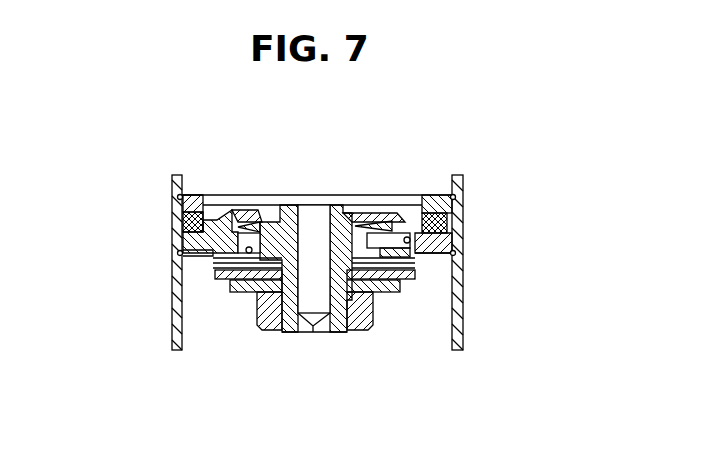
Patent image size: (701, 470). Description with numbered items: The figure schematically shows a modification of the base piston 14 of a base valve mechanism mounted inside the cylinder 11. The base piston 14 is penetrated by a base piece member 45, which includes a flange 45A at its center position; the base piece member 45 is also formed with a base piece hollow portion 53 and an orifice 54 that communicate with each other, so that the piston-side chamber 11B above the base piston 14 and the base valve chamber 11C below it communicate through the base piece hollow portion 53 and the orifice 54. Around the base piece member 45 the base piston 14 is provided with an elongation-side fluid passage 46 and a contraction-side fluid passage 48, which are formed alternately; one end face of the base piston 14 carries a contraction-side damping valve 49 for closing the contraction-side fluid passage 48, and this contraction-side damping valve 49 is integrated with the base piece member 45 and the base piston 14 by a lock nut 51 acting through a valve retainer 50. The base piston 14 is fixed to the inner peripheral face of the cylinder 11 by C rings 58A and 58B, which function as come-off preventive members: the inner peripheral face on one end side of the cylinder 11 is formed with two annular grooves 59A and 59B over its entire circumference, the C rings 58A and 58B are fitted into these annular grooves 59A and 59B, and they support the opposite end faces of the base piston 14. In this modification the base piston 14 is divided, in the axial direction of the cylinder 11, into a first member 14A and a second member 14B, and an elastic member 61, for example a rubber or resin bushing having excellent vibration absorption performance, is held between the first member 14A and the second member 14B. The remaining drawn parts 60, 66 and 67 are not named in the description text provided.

The cylinder 11 is at (463, 312).
The piston-side chamber 11B is at (422, 124).
The base valve chamber 11C is at (417, 419).
The base piston 14 is at (225, 196).
The first member 14A is at (183, 242).
The second member 14B is at (197, 195).
The base piece member 45 is at (300, 333).
The flange 45A is at (247, 223).
The elongation-side fluid passage 46 is at (183, 261).
The contraction-side fluid passage 48 is at (445, 247).
The contraction-side damping valve 49 is at (217, 280).
The valve retainer 50 is at (258, 300).
The lock nut 51 is at (377, 328).
The base piece hollow portion 53 is at (322, 196).
The orifice 54 is at (315, 333).
The C ring 58A is at (463, 257).
The C ring 58B is at (463, 197).
The annular groove 59A is at (183, 255).
The annular groove 59B is at (180, 197).
The seal 60 is at (445, 220).
The elastic member 61 is at (182, 222).
The spacer 66 is at (391, 222).
The spring clip 67 is at (380, 223).